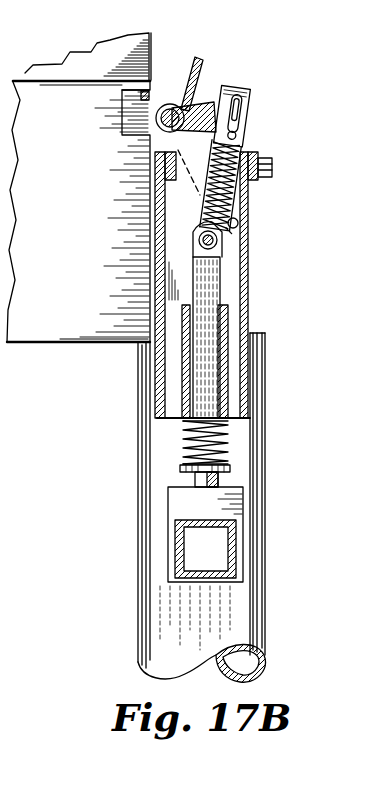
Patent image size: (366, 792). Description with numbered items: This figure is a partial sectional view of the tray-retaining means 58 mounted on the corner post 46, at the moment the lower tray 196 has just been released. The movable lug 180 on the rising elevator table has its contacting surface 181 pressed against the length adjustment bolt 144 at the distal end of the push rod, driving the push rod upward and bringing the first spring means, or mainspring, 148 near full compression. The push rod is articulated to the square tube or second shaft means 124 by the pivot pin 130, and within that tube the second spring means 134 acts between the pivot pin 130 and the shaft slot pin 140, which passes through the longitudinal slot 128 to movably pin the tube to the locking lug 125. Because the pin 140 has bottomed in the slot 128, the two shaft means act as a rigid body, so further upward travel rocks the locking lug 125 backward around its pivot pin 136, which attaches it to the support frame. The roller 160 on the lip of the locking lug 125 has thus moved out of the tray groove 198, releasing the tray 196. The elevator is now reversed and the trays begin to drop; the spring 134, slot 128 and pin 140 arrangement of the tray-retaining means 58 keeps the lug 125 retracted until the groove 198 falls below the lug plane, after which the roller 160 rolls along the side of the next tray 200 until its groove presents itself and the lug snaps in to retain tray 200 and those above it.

The corner post 46 is at (257, 378).
The latch housing assembly 58 is at (278, 289).
The second shaft means 124 is at (252, 92).
The locking lug 125 is at (210, 86).
The longitudinal slot 128 is at (248, 113).
The pivot pin 130 is at (220, 246).
The second spring means 134 is at (230, 190).
The pivot pin 136 is at (238, 223).
The shaft slot pin 140 is at (238, 134).
The length adjustment bolt 144 is at (220, 478).
The first spring means 148 is at (228, 443).
The roller 160 is at (168, 104).
The lug 180 is at (233, 566).
The contacting surface 181 is at (225, 507).
The tray 196 is at (50, 325).
The tray groove 198 is at (133, 117).
The tray 200 is at (151, 43).